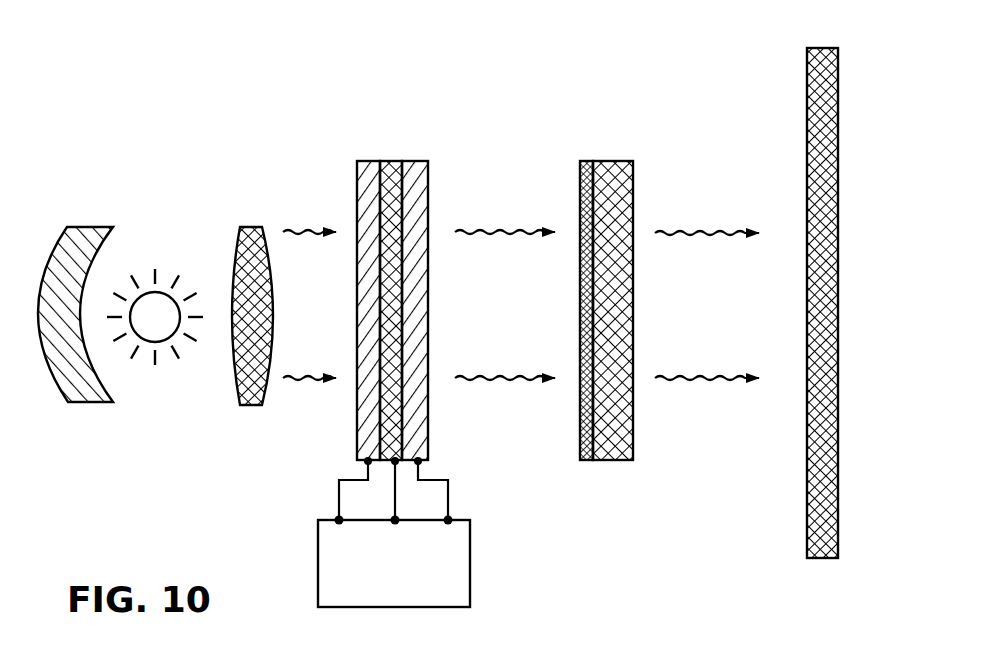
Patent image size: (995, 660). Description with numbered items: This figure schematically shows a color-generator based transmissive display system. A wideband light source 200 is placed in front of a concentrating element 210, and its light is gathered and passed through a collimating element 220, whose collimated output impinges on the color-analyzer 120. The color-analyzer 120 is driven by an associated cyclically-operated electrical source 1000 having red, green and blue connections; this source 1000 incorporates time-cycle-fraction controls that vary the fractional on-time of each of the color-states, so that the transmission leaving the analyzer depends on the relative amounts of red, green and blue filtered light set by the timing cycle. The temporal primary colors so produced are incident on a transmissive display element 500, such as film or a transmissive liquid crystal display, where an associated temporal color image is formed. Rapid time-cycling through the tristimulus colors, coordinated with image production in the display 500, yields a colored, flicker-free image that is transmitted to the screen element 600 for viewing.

The color-analyzer 120 is at (388, 158).
The light source 200 is at (156, 258).
The concentrating element 210 is at (92, 226).
The collimating element 220 is at (249, 222).
The transmissive display element 500 is at (606, 158).
The screen element 600 is at (807, 62).
The cyclically-operated electrical source 1000 is at (477, 548).